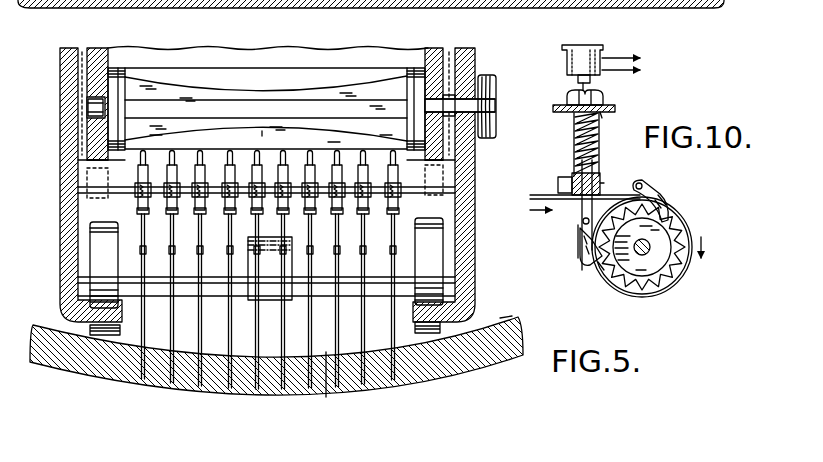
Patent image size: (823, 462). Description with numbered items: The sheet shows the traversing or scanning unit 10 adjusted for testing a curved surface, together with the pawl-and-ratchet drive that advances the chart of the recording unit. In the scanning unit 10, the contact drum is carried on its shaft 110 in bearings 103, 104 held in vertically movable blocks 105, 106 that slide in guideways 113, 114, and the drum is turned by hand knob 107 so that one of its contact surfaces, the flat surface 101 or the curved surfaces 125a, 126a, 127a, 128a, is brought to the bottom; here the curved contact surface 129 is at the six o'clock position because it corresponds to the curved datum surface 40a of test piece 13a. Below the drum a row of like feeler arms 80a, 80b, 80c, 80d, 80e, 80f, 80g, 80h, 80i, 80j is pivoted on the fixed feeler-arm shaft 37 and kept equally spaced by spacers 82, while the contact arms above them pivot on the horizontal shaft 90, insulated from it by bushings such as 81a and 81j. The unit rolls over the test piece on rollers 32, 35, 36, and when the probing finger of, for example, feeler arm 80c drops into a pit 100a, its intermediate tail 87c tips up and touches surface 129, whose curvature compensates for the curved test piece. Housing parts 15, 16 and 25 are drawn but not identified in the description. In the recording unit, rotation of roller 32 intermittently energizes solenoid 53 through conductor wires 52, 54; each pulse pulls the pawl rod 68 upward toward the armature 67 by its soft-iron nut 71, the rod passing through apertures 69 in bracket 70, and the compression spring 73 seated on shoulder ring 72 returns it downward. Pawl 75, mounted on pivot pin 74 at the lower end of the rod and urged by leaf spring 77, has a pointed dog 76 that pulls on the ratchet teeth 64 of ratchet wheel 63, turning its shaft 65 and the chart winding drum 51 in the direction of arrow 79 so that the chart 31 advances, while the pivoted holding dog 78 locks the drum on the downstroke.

In FIG. 5, the traversing unit 10 is at (55, 135).
In FIG. 5, the upper frame member 25 is at (500, 8).
In FIG. 5, the housing side wall 16 is at (62, 220).
In FIG. 5, the housing 15 is at (467, 220).
In FIG. 5, the feeler-arm shaft 37 is at (62, 304).
In FIG. 5, the vertical guideway 114 is at (82, 76).
In FIG. 5, the bearing 104 is at (92, 107).
In FIG. 5, the vertically movable block 106 is at (80, 160).
In FIG. 5, the vertically movable block 105 is at (447, 153).
In FIG. 5, the vertical guideway 113 is at (452, 63).
In FIG. 5, the hand knob 107 is at (490, 107).
In FIG. 5, the bearing 103 is at (433, 101).
In FIG. 5, the shaft 110 is at (476, 108).
In FIG. 5, the contact surface 101 is at (255, 67).
In FIG. 5, the contact surface 125a is at (172, 82).
In FIG. 5, the contact surface 126a is at (215, 95).
In FIG. 5, the contact surface 127a is at (320, 107).
In FIG. 5, the contact surface 128a is at (370, 122).
In FIG. 5, the curved contact surface 129 is at (263, 132).
In FIG. 5, the intermediate tail 87c is at (334, 148).
In FIG. 5, the shaft 90 is at (82, 190).
In FIG. 5, the roller 36 is at (100, 245).
In FIG. 5, the roller 35 is at (437, 245).
In FIG. 5, the spacer 82 is at (213, 282).
In FIG. 5, the roller 32 is at (268, 245).
In FIG. 5, the insulator bushing 81j is at (150, 198).
In FIG. 5, the insulator bushing 81a is at (385, 198).
In FIG. 5, the feeler arm 80a is at (394, 380).
In FIG. 5, the feeler arm 80b is at (364, 384).
In FIG. 5, the feeler arm 80c is at (337, 244).
In FIG. 5, the feeler arm 80d is at (310, 388).
In FIG. 5, the feeler arm 80e is at (283, 389).
In FIG. 5, the feeler arm 80f is at (257, 389).
In FIG. 5, the feeler arm 80g is at (230, 388).
In FIG. 5, the feeler arm 80h is at (200, 386).
In FIG. 5, the feeler arm 80i is at (172, 383).
In FIG. 5, the feeler arm 80j is at (143, 379).
In FIG. 5, the pit 100a is at (326, 397).
In FIG. 5, the test piece 13a is at (465, 357).
In FIG. 5, the curved datum plane 40a is at (499, 318).
In FIG. 10, the solenoid 53 is at (582, 53).
In FIG. 10, the conductor wire 52 is at (624, 55).
In FIG. 10, the conductor wire 54 is at (624, 71).
In FIG. 10, the armature 67 is at (578, 80).
In FIG. 10, the nut 71 is at (568, 97).
In FIG. 10, the supporting bracket 70 is at (615, 108).
In FIG. 10, the aperture 69 is at (602, 112).
In FIG. 10, the pawl rod 68 is at (577, 135).
In FIG. 10, the compression spring 73 is at (576, 150).
In FIG. 10, the shoulder ring 72 is at (600, 168).
In FIG. 10, the chart 31 is at (530, 197).
In FIG. 10, the pivot pin 74 is at (583, 222).
In FIG. 10, the leaf spring 77 is at (578, 238).
In FIG. 10, the pawl 75 is at (583, 248).
In FIG. 10, the pointed dog 76 is at (600, 275).
In FIG. 10, the chart winding drum 51 is at (655, 296).
In FIG. 10, the ratchet teeth 64 is at (678, 219).
In FIG. 10, the ratchet wheel 63 is at (633, 268).
In FIG. 10, the shaft 65 is at (648, 251).
In FIG. 10, the arrow 79 is at (703, 246).
In FIG. 10, the holding dog 78 is at (662, 193).